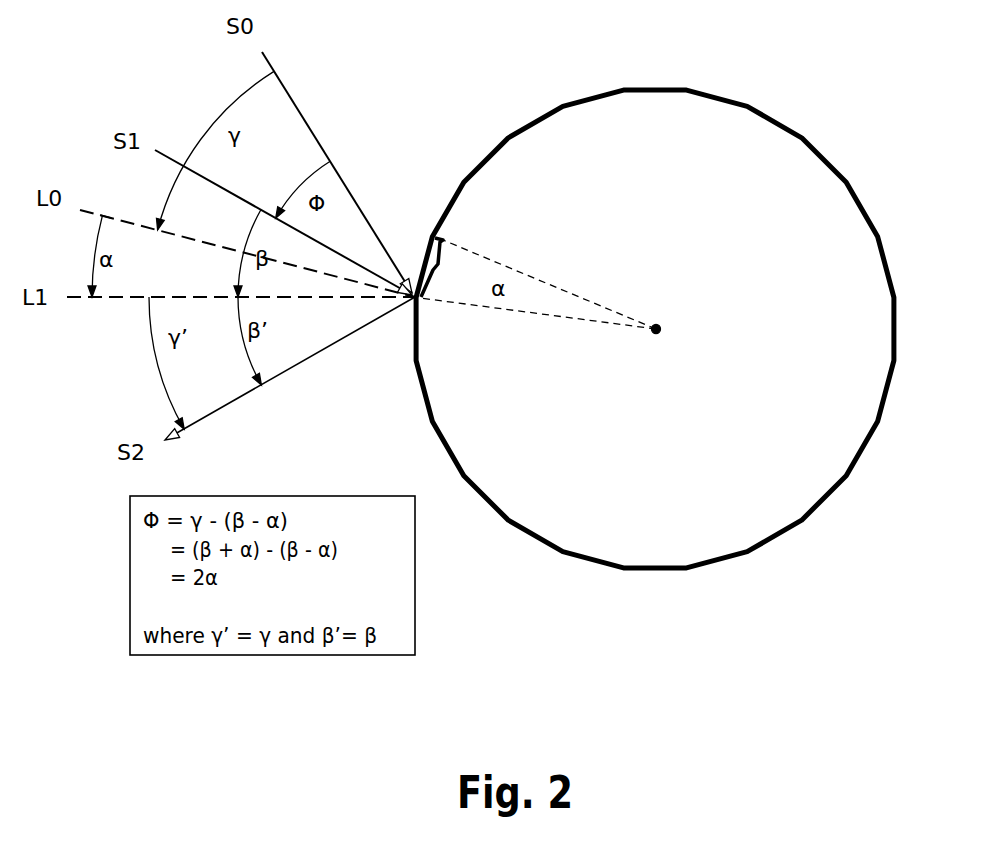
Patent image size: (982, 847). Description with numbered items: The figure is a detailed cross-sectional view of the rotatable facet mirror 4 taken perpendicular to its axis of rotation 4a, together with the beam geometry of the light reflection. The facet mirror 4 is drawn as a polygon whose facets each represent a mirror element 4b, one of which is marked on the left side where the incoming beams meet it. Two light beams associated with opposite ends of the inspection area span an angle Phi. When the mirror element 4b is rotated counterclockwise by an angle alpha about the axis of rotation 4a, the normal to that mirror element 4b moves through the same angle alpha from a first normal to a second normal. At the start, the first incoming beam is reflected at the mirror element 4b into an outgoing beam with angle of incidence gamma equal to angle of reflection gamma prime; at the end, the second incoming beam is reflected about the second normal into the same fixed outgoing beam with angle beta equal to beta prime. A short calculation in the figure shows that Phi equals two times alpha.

The facet mirror 4 is at (787, 126).
The axis of rotation 4a is at (657, 328).
The mirror element 4b is at (446, 271).